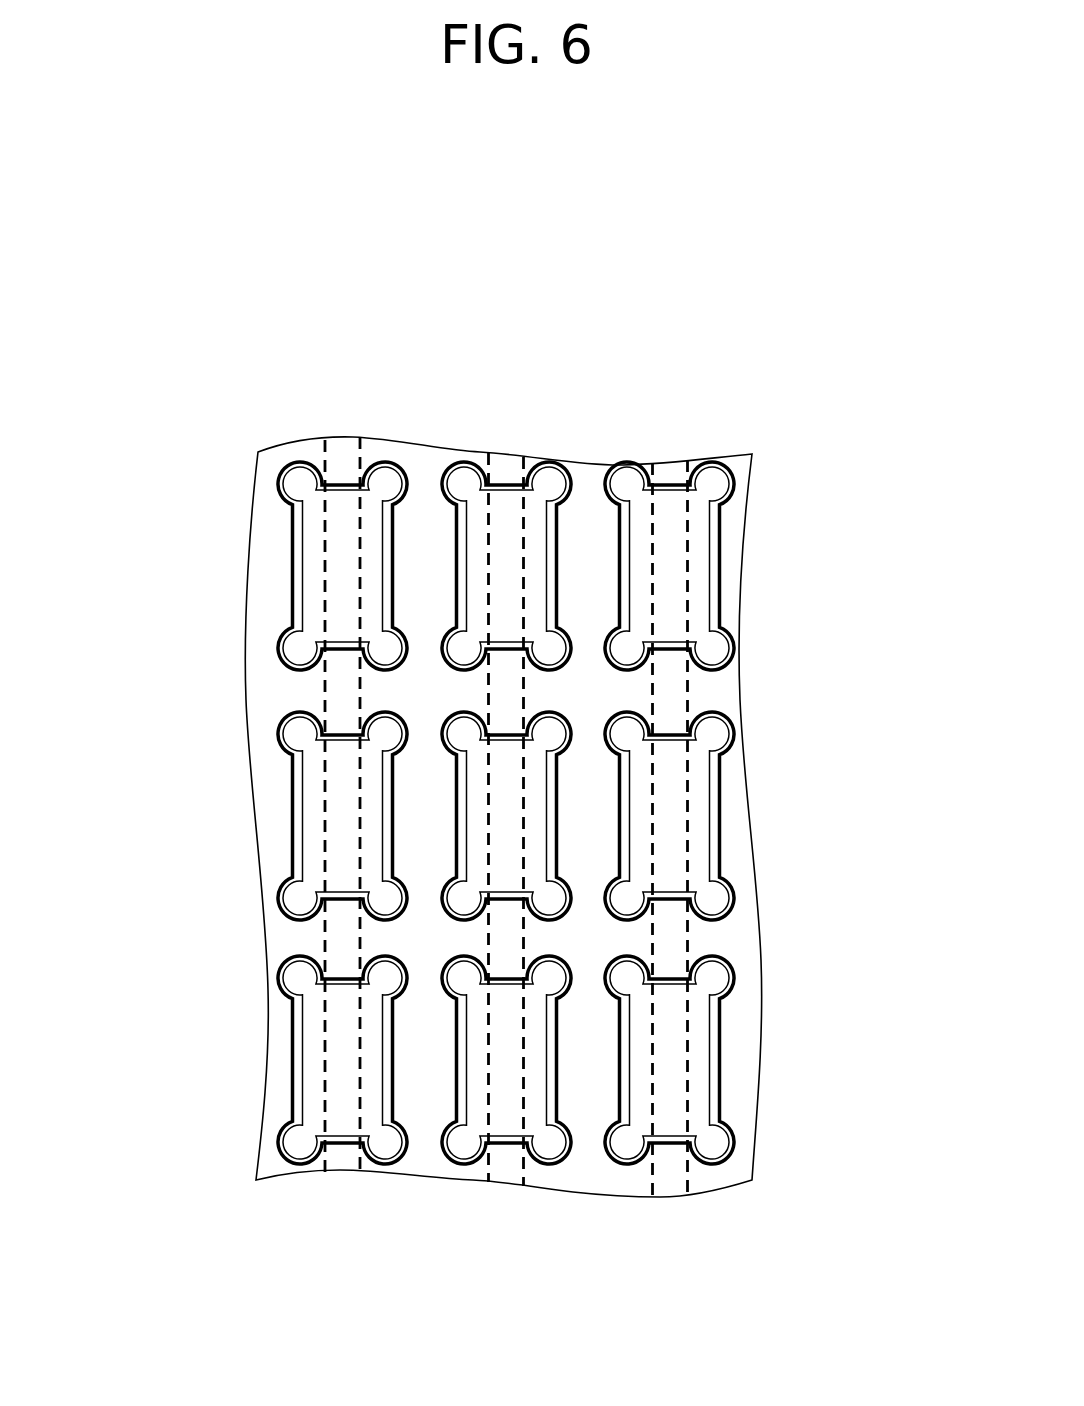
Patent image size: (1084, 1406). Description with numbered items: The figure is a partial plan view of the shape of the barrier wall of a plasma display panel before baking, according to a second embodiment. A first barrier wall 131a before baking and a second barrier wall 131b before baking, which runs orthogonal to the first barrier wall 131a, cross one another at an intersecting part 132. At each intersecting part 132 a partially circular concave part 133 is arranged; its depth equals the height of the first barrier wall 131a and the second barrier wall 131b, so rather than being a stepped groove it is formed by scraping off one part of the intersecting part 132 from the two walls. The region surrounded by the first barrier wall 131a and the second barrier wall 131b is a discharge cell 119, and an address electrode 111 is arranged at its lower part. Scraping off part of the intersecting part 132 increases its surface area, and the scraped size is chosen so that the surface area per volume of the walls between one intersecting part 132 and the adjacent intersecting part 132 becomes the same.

The address electrode 111 is at (672, 473).
The discharge cell 119 is at (692, 541).
The intersecting part 132 is at (585, 943).
The partially circular concave part 133 is at (555, 891).
The first barrier wall before baking 131a is at (598, 1095).
The second barrier wall before baking 131b is at (299, 687).